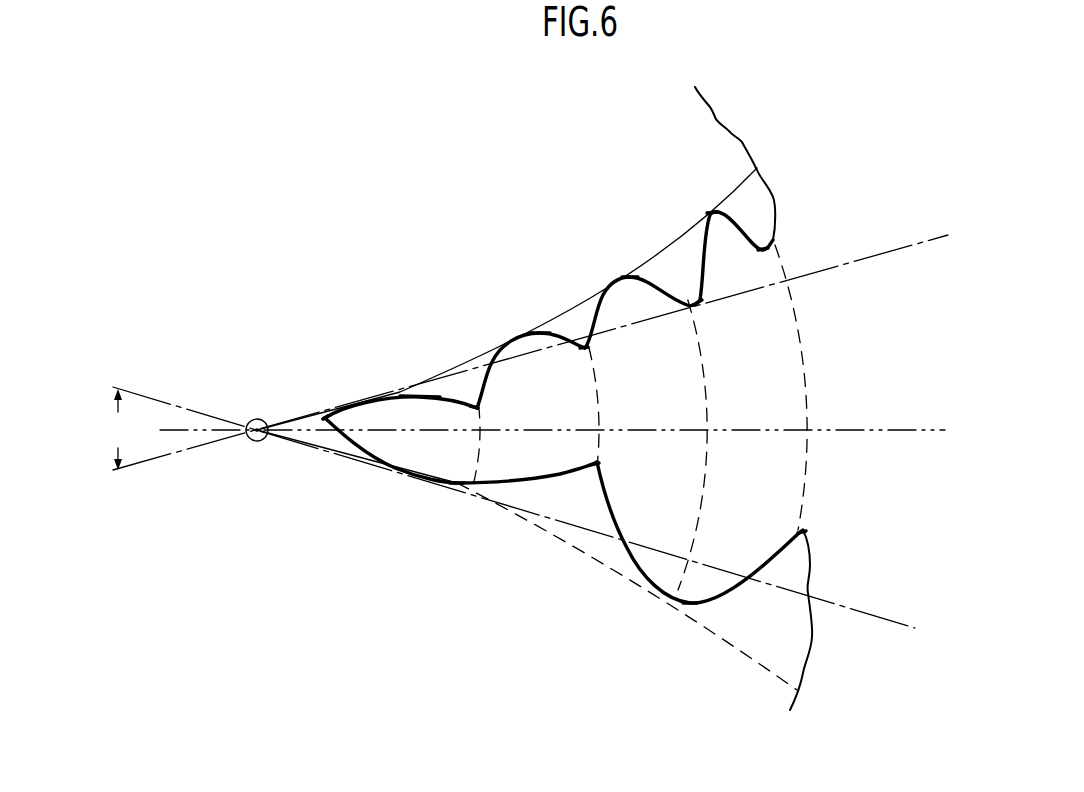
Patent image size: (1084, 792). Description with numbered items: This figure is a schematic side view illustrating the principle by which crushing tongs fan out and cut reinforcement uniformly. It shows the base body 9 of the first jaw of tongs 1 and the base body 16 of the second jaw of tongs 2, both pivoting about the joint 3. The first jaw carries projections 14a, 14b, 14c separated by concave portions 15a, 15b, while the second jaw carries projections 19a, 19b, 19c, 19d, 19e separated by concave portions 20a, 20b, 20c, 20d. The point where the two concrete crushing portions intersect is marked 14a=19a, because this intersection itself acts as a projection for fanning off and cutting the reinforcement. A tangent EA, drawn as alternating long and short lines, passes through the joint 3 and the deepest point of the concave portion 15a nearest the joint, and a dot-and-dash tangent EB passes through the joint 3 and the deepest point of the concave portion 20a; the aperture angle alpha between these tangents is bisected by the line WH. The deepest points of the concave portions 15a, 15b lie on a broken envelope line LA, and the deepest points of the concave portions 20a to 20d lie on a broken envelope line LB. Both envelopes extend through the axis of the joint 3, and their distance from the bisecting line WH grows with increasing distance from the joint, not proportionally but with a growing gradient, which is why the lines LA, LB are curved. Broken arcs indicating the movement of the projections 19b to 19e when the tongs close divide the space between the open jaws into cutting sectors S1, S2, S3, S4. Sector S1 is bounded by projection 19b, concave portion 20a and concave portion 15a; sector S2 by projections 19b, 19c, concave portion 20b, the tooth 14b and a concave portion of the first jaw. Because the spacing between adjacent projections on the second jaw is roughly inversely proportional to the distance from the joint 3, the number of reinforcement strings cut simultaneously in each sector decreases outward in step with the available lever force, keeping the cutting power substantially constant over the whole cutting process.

The first jaw of tongs 1 is at (563, 625).
The second jaw of tongs 2 is at (526, 156).
The joint 3 is at (258, 433).
The base body of the first jaw of tongs 9 is at (542, 597).
The base body of the second jaw of tongs 16 is at (563, 280).
The projection 14a is at (330, 427).
The projection 14b is at (598, 462).
The projection 14c is at (806, 532).
The concave portion 15a is at (457, 485).
The concave portion 15b is at (692, 604).
The projection 19a is at (325, 417).
The projection 19b is at (478, 408).
The projection 19c is at (587, 346).
The projection 19d is at (703, 301).
The projection 19e is at (770, 242).
The concave portion 20a is at (422, 397).
The concave portion 20b is at (513, 343).
The concave portion 20c is at (627, 277).
The concave portion 20d is at (705, 207).
The cutting sector S1 is at (431, 450).
The cutting sector S2 is at (540, 465).
The cutting sector S3 is at (671, 488).
The cutting sector S4 is at (771, 488).
The envelope line LA is at (790, 686).
The envelope line LB is at (668, 237).
The tangent EA is at (878, 618).
The tangent EB is at (850, 263).
The bisecting line WH is at (878, 430).
The cone angle alpha is at (121, 429).